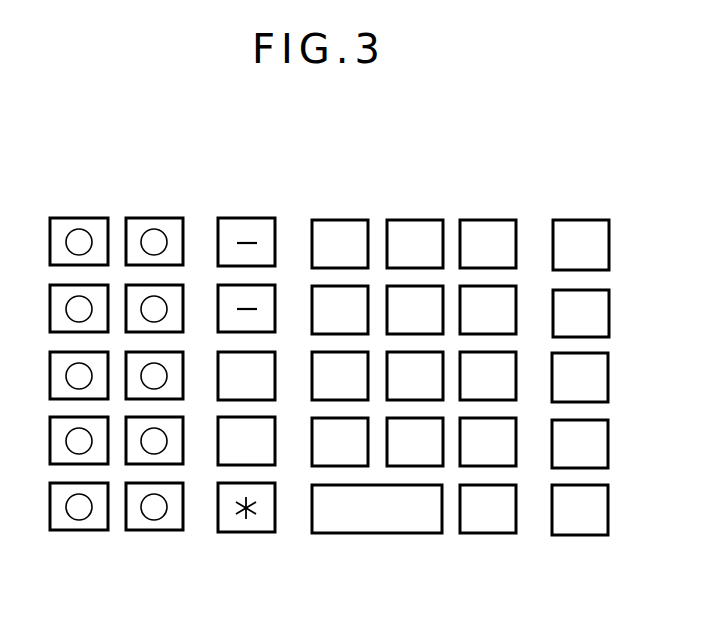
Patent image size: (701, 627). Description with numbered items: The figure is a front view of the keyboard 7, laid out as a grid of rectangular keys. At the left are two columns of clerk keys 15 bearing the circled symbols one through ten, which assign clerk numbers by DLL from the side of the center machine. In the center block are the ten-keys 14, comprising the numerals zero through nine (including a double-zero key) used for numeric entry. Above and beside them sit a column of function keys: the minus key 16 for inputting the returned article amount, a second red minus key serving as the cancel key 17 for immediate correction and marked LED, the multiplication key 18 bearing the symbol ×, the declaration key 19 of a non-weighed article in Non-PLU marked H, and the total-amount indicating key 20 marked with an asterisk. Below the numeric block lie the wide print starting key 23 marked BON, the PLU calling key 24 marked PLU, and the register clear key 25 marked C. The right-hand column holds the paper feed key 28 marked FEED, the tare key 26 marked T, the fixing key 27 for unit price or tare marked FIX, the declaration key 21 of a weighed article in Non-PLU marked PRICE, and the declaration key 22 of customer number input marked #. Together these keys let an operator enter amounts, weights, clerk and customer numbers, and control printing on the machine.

The keyboard 7 is at (532, 175).
The ten-keys 14 is at (413, 228).
The clerk keys 15 is at (82, 530).
The minus key 16 is at (246, 228).
The cancel key 17 is at (277, 293).
The multiplication key 18 is at (222, 363).
The declaration key of non-weighed article 19 is at (218, 458).
The total-amount indicating key 20 is at (248, 532).
The declaration key of weighed article 21 is at (608, 450).
The declaration key of customer No. input 22 is at (608, 517).
The print starting key 23 is at (380, 533).
The PLU calling key 24 is at (488, 533).
The register clear key 25 is at (516, 462).
The tare key 26 is at (609, 317).
The fixing key 27 is at (608, 382).
The paper feed key 28 is at (609, 247).